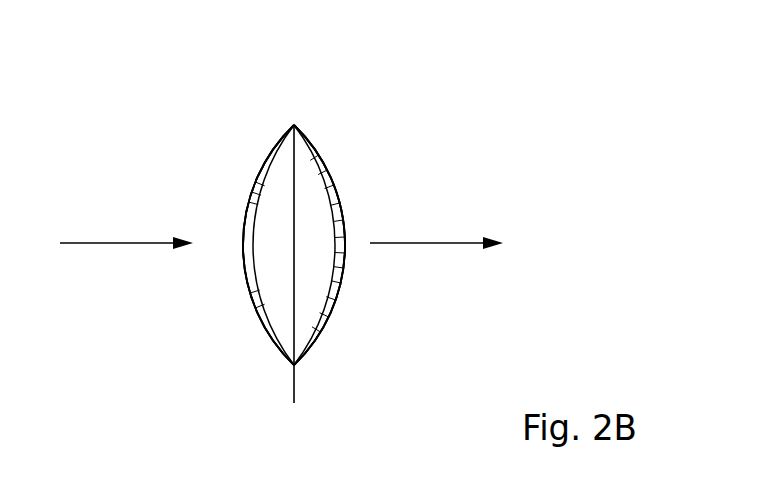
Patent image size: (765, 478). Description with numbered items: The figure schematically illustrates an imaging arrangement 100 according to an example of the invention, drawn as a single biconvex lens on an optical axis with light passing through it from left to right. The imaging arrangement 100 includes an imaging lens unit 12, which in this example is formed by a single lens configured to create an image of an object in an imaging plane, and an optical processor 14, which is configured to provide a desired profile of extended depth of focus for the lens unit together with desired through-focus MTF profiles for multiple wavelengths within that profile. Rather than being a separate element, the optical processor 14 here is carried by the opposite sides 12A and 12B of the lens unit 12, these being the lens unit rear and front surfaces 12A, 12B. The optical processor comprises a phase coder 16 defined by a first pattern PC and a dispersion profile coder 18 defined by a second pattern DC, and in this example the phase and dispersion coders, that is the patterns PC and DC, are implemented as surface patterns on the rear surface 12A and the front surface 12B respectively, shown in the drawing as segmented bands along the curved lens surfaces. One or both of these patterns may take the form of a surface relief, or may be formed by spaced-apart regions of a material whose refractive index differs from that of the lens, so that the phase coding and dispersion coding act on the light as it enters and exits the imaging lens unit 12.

The imaging arrangement 100 is at (296, 230).
The imaging lens unit 12 is at (296, 238).
The rear surface of the lens unit 12A is at (253, 257).
The front surface of the lens unit 12B is at (345, 268).
The optical processor 14 is at (262, 302).
The phase coder 16 is at (250, 188).
The dispersion profile coder 18 is at (328, 183).
The second pattern DC is at (333, 212).
The first pattern PC is at (250, 283).